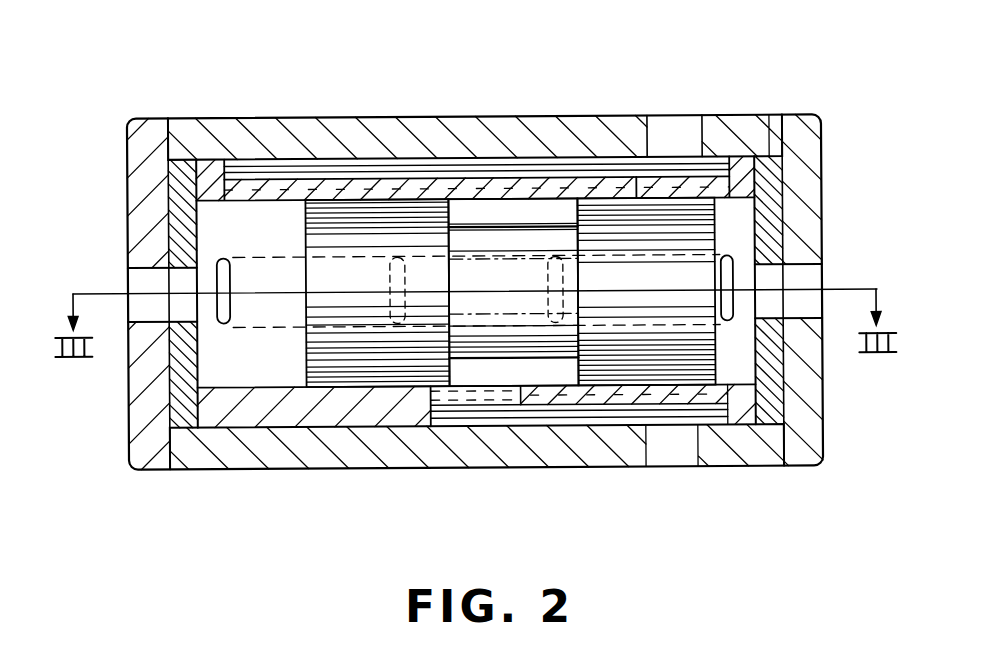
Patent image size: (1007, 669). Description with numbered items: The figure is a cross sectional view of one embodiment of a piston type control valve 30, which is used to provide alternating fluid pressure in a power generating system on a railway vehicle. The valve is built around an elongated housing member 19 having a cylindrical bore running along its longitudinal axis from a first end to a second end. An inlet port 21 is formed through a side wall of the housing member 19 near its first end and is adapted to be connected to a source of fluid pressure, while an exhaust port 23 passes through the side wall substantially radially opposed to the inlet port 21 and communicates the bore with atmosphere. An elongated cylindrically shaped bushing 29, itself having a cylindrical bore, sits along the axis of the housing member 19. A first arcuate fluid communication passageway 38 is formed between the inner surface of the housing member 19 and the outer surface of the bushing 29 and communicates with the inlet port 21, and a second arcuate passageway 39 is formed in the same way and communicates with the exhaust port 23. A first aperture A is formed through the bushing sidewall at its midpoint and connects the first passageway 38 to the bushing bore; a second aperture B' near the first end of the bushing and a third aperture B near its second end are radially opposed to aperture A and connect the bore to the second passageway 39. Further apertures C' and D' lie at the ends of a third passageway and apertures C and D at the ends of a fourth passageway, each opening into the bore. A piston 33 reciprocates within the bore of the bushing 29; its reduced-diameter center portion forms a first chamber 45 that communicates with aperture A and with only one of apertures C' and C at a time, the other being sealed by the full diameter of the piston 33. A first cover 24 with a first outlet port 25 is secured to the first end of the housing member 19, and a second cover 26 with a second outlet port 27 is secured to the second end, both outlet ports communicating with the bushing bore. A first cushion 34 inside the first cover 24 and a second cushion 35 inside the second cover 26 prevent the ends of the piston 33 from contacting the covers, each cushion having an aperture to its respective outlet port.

The control valve 30 is at (125, 100).
The housing member 19 is at (256, 133).
The inlet port 21 is at (683, 444).
The exhaust port 23 is at (670, 125).
The first cover 24 is at (815, 177).
The first outlet port 25 is at (813, 277).
The second cover 26 is at (135, 180).
The second outlet port 27 is at (130, 276).
The bushing 29 is at (477, 127).
The piston 33 is at (355, 367).
The first cushion 34 is at (767, 163).
The second cushion 35 is at (182, 162).
The first fluid communication passageway 38 is at (647, 420).
The second fluid communication passageway 39 is at (395, 167).
The first chamber 45 is at (530, 370).
The first aperture A is at (478, 390).
The third aperture B is at (429, 128).
The second aperture B' is at (642, 127).
The sixth aperture C is at (333, 266).
The fourth aperture C' is at (587, 393).
The seventh aperture D is at (252, 316).
The fifth aperture D' is at (736, 314).